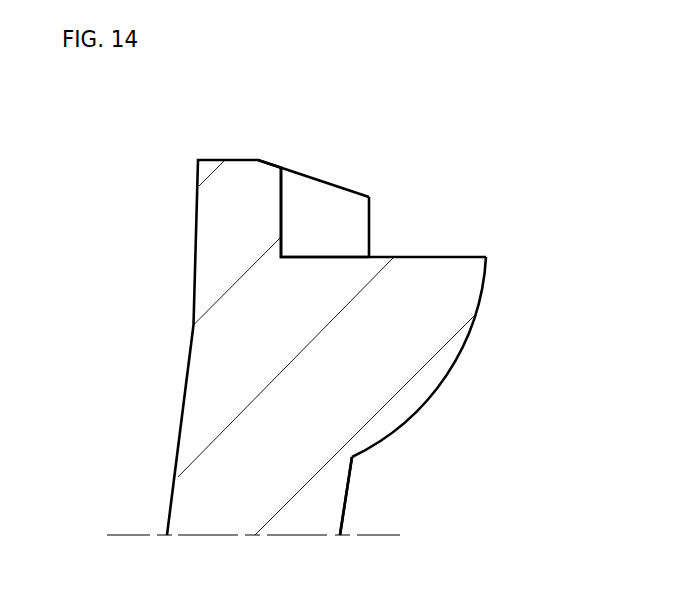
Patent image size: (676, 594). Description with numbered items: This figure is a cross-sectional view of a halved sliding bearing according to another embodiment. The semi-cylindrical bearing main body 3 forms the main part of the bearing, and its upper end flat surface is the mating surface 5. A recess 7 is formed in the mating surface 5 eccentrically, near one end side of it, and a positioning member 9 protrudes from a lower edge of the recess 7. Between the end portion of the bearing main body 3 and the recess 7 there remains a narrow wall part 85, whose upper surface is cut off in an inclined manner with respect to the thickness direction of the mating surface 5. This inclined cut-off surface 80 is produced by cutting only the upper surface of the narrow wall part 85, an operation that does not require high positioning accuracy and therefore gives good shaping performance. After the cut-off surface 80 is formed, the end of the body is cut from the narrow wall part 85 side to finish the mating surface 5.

The mating surface 5 is at (225, 160).
The recess 7 is at (325, 239).
The cut-off surface 80 is at (315, 172).
The narrow wall part 85 is at (372, 225).
The positioning member 9 is at (445, 387).
The bearing main body 3 is at (352, 488).